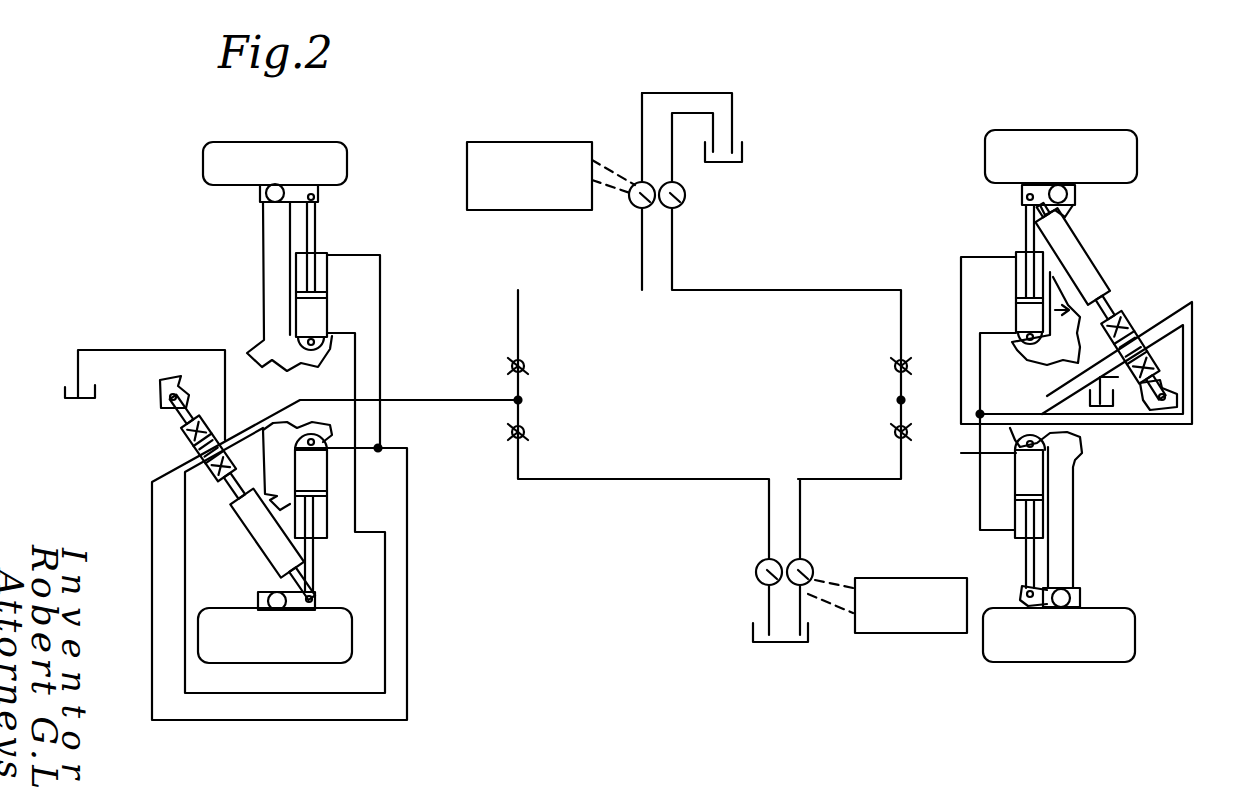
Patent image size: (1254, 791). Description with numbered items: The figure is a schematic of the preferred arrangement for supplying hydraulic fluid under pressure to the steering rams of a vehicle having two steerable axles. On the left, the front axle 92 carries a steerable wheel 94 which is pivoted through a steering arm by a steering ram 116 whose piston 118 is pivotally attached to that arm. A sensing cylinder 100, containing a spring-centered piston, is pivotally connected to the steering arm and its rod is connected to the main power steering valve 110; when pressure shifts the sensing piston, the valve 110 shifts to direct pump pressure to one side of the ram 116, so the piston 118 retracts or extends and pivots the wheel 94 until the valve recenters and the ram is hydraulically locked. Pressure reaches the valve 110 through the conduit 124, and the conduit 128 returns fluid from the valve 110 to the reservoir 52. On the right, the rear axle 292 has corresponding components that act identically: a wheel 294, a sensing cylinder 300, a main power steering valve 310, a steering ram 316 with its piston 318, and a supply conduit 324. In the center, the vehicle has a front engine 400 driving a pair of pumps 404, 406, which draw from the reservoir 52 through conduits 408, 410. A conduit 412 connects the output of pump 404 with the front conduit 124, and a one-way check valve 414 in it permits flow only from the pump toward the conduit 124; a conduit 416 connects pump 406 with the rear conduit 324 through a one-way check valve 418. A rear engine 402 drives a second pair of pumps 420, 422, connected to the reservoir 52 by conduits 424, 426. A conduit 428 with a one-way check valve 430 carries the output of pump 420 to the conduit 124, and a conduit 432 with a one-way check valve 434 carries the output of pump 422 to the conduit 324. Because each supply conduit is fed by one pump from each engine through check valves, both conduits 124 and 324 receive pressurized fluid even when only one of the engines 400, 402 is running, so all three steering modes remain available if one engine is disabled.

The reservoir 52 is at (742, 158).
The front axle 92 is at (291, 127).
The steerable wheel 94 is at (347, 176).
The sensing cylinder 100 is at (266, 553).
The main power steering valve 110 is at (185, 428).
The steering ram 116 is at (328, 273).
The piston 118 is at (328, 294).
The conduit 124 is at (468, 398).
The conduit 128 is at (151, 350).
The rear axle 292 is at (1066, 108).
The steerable wheel 294 is at (1138, 160).
The sensing cylinder 300 is at (1080, 250).
The main power steering valve 310 is at (1130, 318).
The steering ram 316 is at (1015, 325).
The piston 318 is at (1015, 300).
The conduit 324 is at (1047, 396).
The front engine 400 is at (576, 116).
The rear engine 402 is at (912, 634).
The pump 404 is at (628, 207).
The pump 406 is at (685, 205).
The conduit 408 is at (705, 72).
The conduit 410 is at (722, 128).
The conduit 412 is at (640, 254).
The one-way check valve 414 is at (527, 366).
The conduit 416 is at (675, 258).
The one-way check valve 418 is at (895, 362).
The pump 420 is at (757, 565).
The pump 422 is at (812, 560).
The conduit 424 is at (768, 597).
The conduit 426 is at (803, 606).
The conduit 428 is at (520, 413).
The one-way check valve 430 is at (527, 436).
The conduit 432 is at (896, 402).
The one-way check valve 434 is at (895, 436).